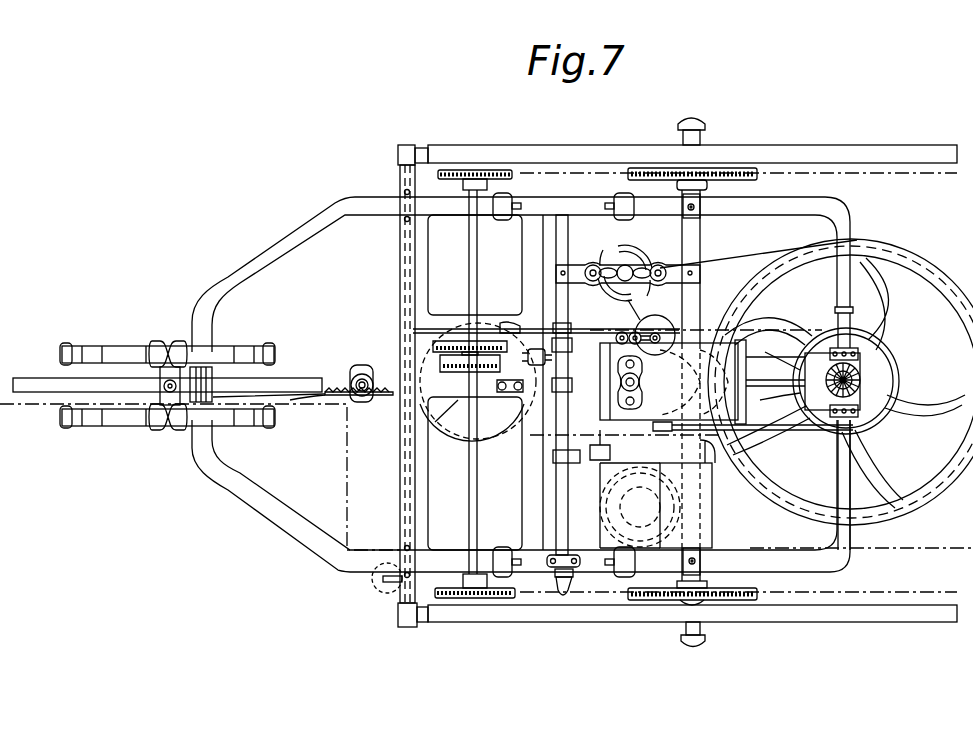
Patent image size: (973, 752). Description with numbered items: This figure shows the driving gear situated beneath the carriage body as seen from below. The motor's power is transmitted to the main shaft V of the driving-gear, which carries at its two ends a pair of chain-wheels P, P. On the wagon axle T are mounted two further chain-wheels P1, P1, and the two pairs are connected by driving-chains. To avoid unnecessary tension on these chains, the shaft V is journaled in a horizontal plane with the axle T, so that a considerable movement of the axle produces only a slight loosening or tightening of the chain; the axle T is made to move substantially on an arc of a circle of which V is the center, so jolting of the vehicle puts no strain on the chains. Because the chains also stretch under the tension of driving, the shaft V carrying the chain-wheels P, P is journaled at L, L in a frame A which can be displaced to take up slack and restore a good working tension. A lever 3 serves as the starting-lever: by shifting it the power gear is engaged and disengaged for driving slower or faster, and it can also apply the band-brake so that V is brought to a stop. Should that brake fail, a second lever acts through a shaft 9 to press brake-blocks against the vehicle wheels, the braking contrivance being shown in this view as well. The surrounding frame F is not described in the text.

The shaft 9 is at (400, 177).
The chain-wheel P is at (466, 384).
The chain-wheel P1 is at (708, 384).
The journal L is at (478, 250).
The main shaft V is at (469, 275).
The frame A is at (549, 391).
The axle T is at (691, 385).
The lever 3 is at (574, 580).
The frame F is at (521, 402).